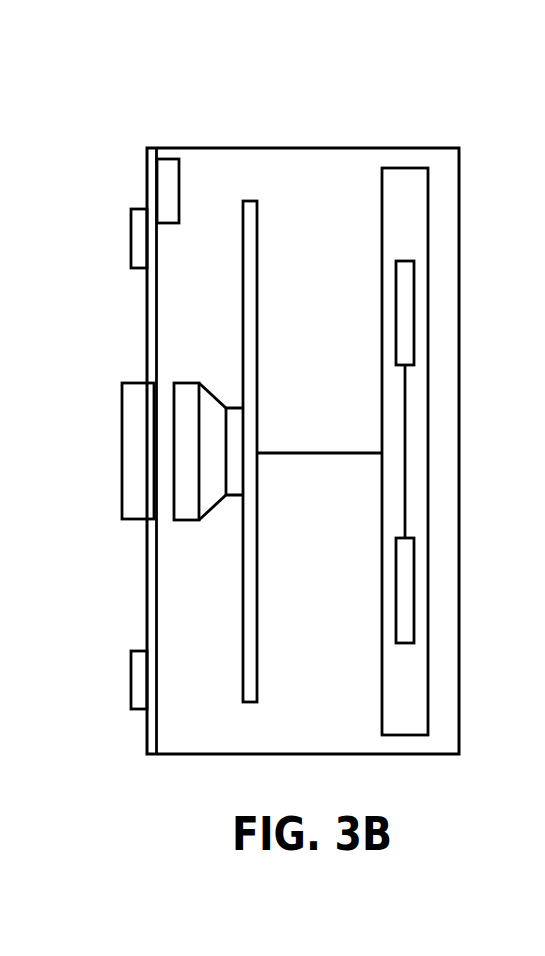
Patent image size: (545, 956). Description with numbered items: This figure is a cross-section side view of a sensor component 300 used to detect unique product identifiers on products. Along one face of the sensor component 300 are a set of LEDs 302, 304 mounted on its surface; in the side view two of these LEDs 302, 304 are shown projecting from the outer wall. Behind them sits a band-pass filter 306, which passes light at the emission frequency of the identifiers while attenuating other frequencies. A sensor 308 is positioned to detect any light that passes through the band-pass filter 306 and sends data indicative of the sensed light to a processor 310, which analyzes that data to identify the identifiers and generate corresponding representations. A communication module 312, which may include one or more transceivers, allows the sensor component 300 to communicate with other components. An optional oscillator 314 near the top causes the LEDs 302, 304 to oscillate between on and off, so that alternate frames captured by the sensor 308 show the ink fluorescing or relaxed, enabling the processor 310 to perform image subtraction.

The sensor component 300 is at (312, 89).
The LED 302 is at (131, 235).
The LED 304 is at (131, 680).
The band-pass filter 306 is at (122, 418).
The sensor 308 is at (191, 382).
The processor 310 is at (412, 318).
The communication module 312 is at (412, 580).
The oscillator 314 is at (167, 147).